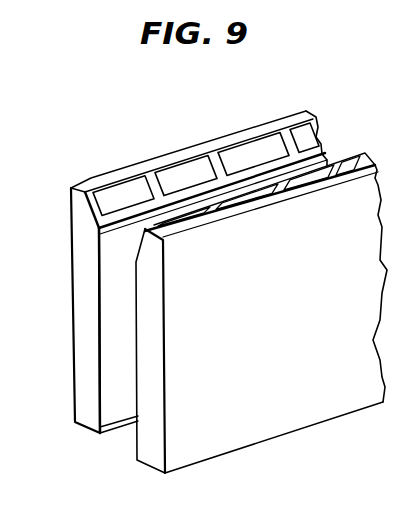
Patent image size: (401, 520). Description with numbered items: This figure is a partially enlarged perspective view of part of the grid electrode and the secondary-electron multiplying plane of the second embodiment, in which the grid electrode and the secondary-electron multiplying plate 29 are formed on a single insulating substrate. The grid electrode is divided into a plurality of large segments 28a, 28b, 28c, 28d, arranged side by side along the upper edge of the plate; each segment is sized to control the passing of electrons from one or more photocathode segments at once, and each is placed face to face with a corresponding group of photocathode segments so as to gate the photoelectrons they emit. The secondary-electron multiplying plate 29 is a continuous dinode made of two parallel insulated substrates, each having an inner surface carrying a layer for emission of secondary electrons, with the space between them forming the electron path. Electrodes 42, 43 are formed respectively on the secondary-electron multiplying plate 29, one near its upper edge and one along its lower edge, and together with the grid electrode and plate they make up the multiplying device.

The grid electrode segment 28a is at (112, 181).
The grid electrode segment 28b is at (172, 160).
The grid electrode segment 28c is at (240, 137).
The grid electrode segment 28d is at (297, 120).
The secondary-electron multiplying plate 29 is at (113, 368).
The electrode 42 is at (101, 231).
The electrode 43 is at (115, 423).